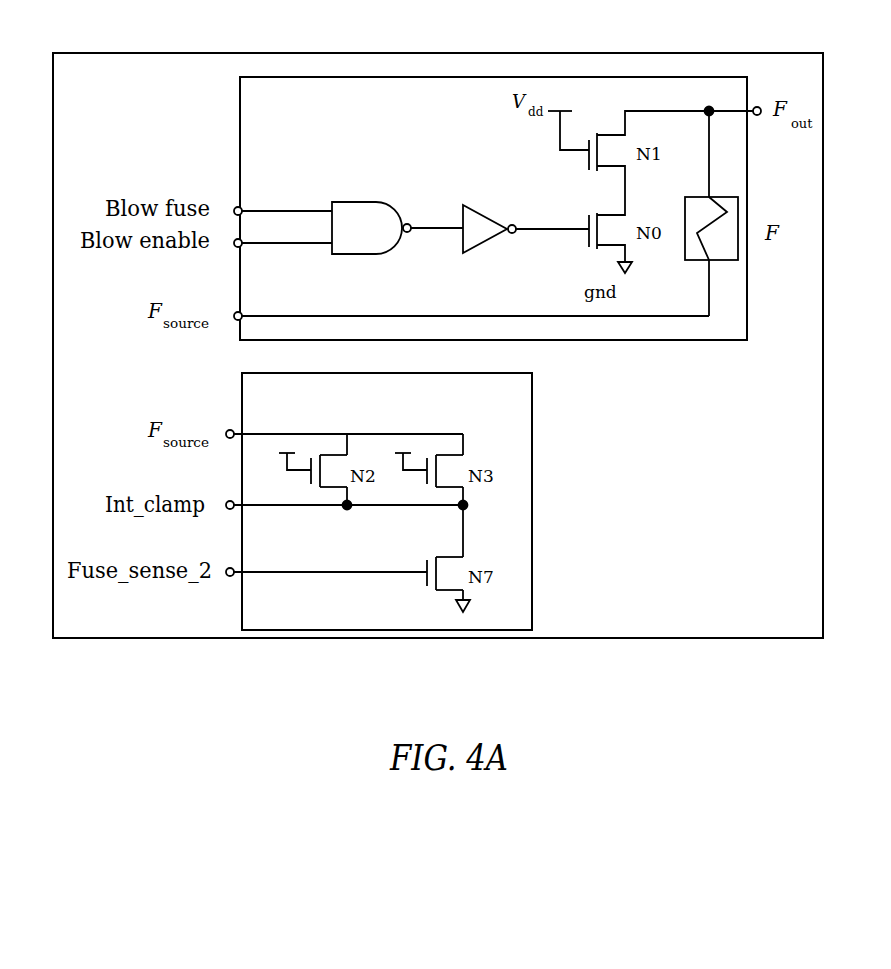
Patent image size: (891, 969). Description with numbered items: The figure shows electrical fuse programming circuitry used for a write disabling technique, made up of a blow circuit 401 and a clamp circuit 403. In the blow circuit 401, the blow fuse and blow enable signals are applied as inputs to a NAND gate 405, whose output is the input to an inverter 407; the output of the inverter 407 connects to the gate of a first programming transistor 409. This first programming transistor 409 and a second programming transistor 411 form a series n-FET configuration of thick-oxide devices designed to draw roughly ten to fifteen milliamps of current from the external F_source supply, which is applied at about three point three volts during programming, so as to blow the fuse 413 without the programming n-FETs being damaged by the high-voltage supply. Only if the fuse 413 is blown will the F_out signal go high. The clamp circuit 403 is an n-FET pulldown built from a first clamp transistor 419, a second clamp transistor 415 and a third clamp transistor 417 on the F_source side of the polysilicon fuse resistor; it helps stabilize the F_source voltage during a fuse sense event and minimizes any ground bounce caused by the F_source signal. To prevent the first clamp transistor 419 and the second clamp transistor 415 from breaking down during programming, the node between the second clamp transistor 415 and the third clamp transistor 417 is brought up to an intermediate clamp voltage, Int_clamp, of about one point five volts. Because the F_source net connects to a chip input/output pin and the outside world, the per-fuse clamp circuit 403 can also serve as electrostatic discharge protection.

The blow circuit 401 is at (362, 151).
The clamp circuit 403 is at (429, 409).
The NAND gate 405 is at (375, 203).
The inverter 407 is at (475, 208).
The transistor N0 409 is at (606, 248).
The transistor N1 411 is at (606, 168).
The fuse 413 is at (738, 260).
The transistor N3 415 is at (465, 455).
The transistor N7 417 is at (465, 559).
The transistor N2 419 is at (313, 476).